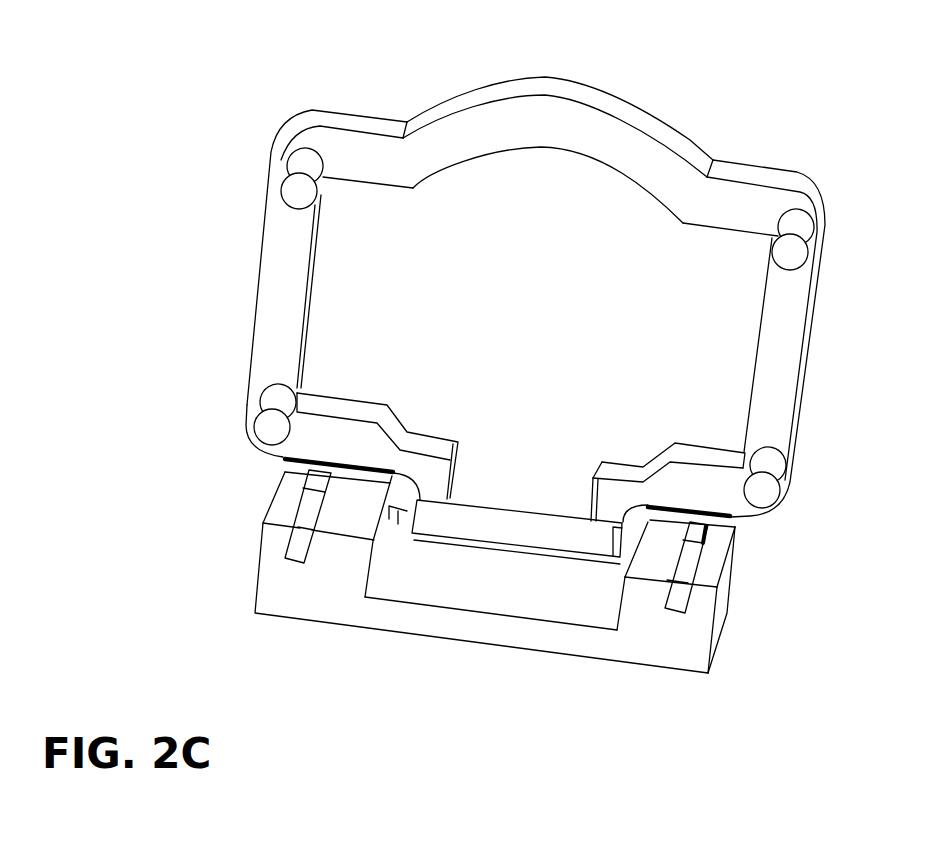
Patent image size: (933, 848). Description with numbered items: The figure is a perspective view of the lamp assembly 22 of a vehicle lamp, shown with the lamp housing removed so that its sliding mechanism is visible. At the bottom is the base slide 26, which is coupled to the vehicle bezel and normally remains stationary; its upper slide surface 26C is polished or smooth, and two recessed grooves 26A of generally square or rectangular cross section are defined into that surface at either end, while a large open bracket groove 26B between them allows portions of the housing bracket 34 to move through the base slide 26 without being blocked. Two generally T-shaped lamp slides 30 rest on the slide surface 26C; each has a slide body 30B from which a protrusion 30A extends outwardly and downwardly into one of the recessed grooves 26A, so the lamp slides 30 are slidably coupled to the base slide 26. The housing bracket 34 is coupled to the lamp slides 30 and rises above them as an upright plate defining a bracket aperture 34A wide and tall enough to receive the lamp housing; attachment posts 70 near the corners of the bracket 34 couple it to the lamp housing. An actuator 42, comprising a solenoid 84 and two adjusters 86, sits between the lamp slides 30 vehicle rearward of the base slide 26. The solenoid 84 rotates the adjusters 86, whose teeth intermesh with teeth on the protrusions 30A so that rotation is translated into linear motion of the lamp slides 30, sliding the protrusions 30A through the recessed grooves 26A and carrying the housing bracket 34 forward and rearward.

The lamp assembly 22 is at (828, 169).
The housing bracket 34 is at (660, 157).
The bracket aperture 34A is at (487, 205).
The attachment posts 70 is at (300, 163).
The lamp slide 30 is at (280, 459).
The protrusion 30A is at (318, 480).
The slide body 30B is at (368, 477).
The actuator 42 is at (497, 502).
The solenoid 84 is at (543, 528).
The base slide 26 is at (723, 607).
The slide surface 26C is at (333, 515).
The recessed grooves 26A is at (290, 565).
The bracket groove 26B is at (495, 590).
The adjusters 86 is at (398, 517).